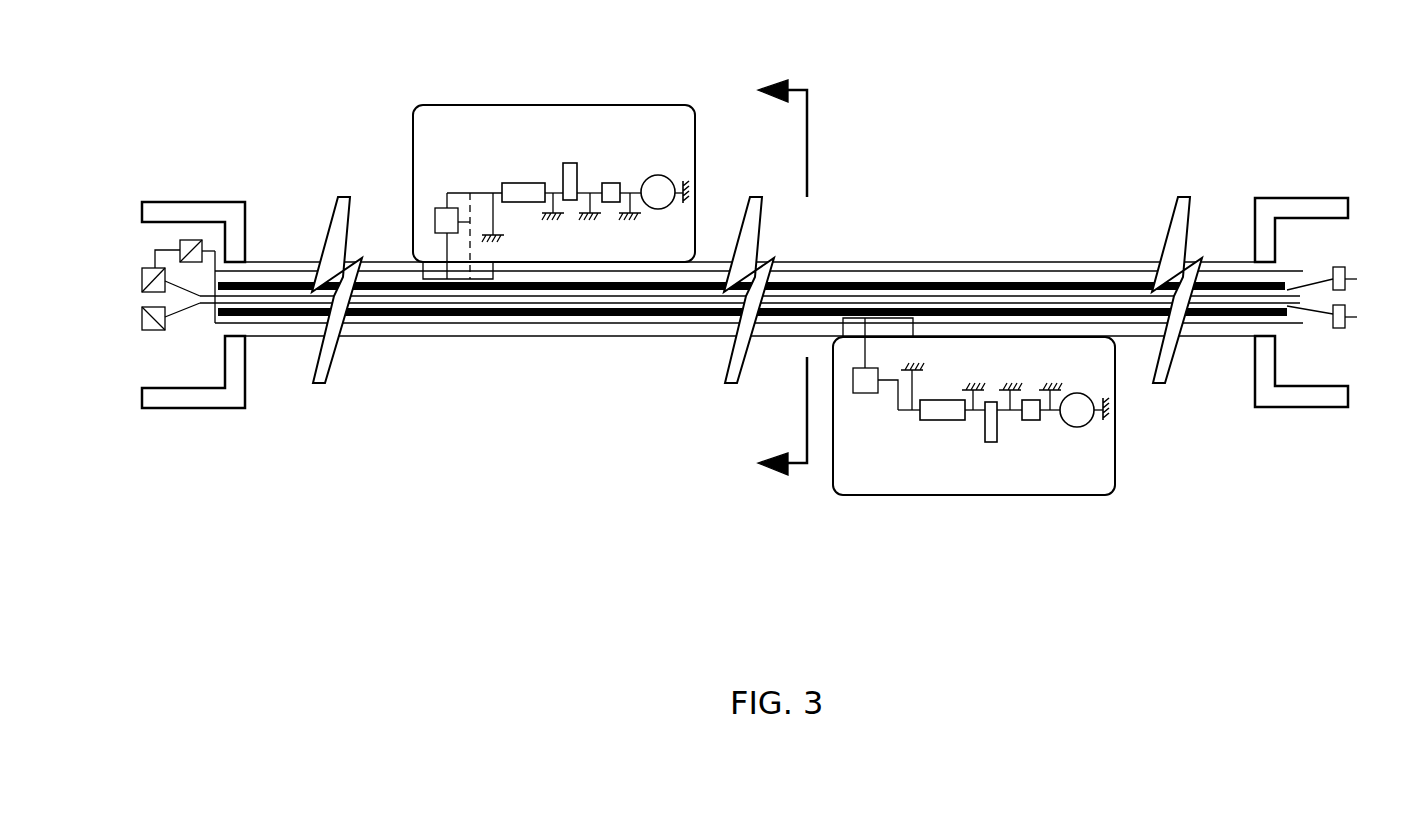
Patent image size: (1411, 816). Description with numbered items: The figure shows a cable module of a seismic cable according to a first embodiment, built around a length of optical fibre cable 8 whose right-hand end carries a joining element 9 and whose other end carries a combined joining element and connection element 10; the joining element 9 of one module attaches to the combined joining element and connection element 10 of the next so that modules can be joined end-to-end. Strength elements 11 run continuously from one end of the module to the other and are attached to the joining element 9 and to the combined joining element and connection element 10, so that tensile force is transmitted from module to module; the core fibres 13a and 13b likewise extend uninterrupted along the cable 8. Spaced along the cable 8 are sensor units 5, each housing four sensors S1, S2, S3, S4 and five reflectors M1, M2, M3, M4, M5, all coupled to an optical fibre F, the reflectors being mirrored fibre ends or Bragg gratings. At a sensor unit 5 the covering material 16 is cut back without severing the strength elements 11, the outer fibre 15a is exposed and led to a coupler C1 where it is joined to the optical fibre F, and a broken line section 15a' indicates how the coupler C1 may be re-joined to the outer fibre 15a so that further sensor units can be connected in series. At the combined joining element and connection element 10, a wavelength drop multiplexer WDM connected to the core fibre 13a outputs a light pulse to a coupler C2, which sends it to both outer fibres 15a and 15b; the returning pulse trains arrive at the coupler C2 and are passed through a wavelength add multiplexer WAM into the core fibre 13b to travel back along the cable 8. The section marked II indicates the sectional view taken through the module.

The sensor unit 5 is at (660, 105).
The optical fibre cable 8 is at (878, 261).
The joining element 9 is at (1283, 198).
The combined joining element and connection element 10 is at (192, 202).
The strength elements 11 is at (400, 283).
The core fibre 13a is at (142, 280).
The core fibre 13b is at (142, 322).
The outer fibre 15a is at (808, 224).
The broken line section of outer fibre 15a' is at (443, 132).
The outer fibre 15b is at (253, 325).
The covering material 16 is at (572, 337).
The coupler C1 is at (441, 208).
The coupler C2 is at (202, 240).
The optical fibre F is at (483, 193).
The reflector M1 is at (716, 301).
The reflector M2 is at (761, 301).
The reflector M3 is at (805, 301).
The reflector M4 is at (844, 301).
The reflector M5 is at (693, 178).
The sensor S1 is at (520, 183).
The sensor S2 is at (570, 163).
The sensor S3 is at (612, 183).
The sensor S4 is at (657, 175).
The wavelength drop multiplexer WDM is at (155, 268).
The wavelength add multiplexer WAM is at (152, 330).
The section line II is at (773, 279).